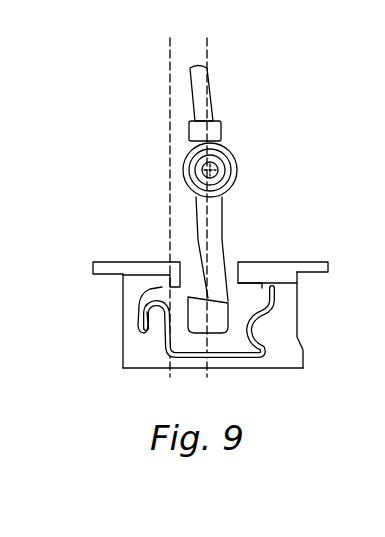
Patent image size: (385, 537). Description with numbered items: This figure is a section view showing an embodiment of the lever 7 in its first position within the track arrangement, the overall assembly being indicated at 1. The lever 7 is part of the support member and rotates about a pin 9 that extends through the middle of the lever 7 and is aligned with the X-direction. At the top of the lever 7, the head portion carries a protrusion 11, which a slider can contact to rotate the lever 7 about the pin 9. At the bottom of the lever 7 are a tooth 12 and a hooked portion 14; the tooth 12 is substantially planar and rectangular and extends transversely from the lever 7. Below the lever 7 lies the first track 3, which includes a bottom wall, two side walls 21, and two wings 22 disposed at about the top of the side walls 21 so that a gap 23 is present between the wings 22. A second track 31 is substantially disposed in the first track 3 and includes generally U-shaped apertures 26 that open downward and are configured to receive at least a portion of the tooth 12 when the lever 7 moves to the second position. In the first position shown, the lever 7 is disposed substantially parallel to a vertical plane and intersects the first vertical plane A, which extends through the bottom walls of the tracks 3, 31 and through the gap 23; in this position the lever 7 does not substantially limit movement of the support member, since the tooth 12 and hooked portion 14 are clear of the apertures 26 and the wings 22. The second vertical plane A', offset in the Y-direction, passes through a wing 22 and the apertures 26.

The disc brake 1 is at (96, 117).
The first track 3 is at (262, 370).
The lever 7 is at (247, 154).
The pin 9 is at (236, 176).
The protrusion 11 is at (206, 82).
The tooth 12 is at (223, 368).
The hooked portion 14 is at (200, 282).
The side walls 21 is at (122, 311).
The wings 22 is at (124, 262).
The gap 23 is at (243, 258).
The apertures 26 is at (167, 312).
The second track 31 is at (157, 333).